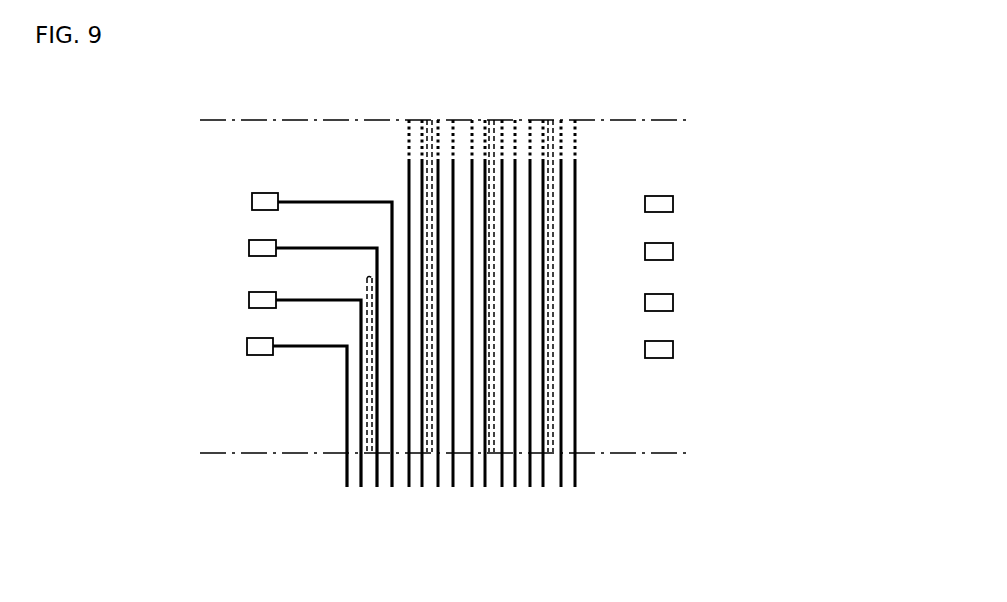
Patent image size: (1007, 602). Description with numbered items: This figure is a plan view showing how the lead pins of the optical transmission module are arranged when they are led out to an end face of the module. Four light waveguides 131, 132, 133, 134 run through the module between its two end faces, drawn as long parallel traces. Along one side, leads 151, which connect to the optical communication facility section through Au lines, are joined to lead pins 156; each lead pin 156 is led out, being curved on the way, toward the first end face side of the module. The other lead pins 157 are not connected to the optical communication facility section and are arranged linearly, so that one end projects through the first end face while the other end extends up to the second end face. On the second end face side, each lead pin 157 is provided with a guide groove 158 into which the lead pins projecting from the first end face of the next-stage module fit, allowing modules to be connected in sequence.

The light waveguide 131 is at (369, 453).
The light waveguide 132 is at (428, 453).
The light waveguide 133 is at (490, 453).
The light waveguide 134 is at (549, 453).
The lead 151 is at (265, 196).
The lead pin 156 is at (318, 348).
The lead pin 157 is at (574, 402).
The guide groove 158 is at (577, 136).